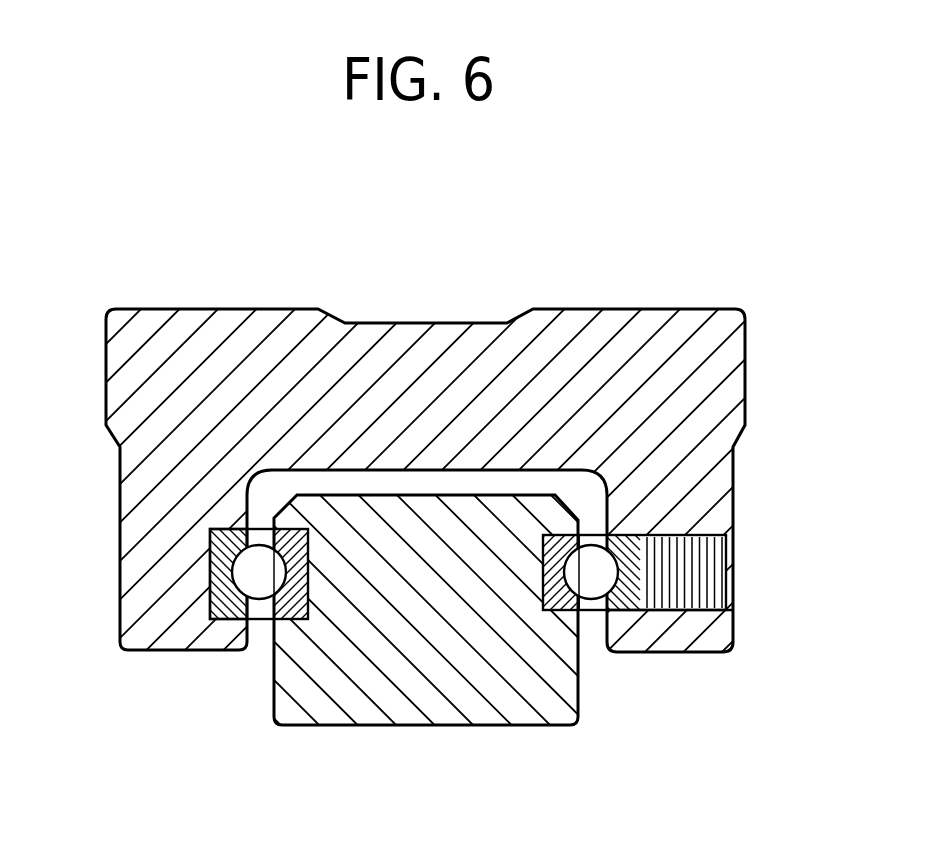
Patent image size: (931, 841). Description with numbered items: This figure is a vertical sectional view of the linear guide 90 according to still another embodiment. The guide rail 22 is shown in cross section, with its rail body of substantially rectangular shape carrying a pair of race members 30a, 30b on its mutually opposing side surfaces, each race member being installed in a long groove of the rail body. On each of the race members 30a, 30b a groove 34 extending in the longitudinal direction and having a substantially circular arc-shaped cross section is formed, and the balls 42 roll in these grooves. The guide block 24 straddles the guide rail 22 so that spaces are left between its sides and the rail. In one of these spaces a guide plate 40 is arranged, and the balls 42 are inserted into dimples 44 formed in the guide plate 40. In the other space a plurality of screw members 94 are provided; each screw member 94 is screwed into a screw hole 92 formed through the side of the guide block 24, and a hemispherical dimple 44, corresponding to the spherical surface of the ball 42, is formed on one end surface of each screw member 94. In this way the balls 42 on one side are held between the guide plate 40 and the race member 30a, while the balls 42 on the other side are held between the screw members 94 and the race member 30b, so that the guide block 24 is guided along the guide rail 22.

The linear guide 90 is at (697, 152).
The guide block 24 is at (666, 308).
The guide rail 22 is at (403, 728).
The groove 34 is at (258, 546).
The guide plate 40 is at (223, 558).
The ball 42 is at (266, 592).
The dimple 44 is at (212, 620).
The screw member 94 is at (677, 594).
The screw hole 92 is at (697, 612).
The race member 30a is at (292, 605).
The race member 30b is at (576, 618).